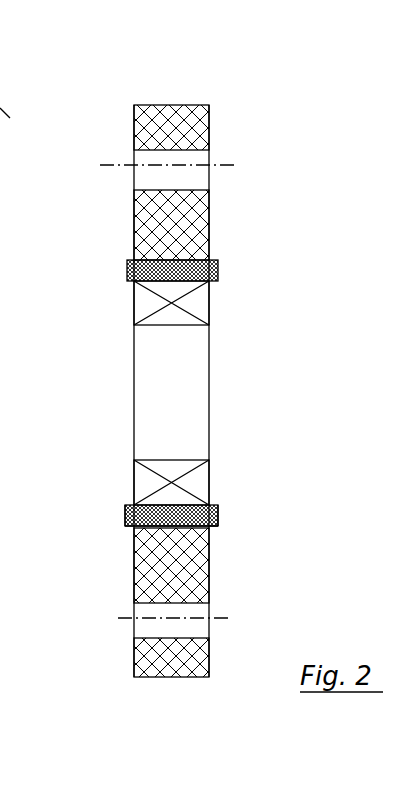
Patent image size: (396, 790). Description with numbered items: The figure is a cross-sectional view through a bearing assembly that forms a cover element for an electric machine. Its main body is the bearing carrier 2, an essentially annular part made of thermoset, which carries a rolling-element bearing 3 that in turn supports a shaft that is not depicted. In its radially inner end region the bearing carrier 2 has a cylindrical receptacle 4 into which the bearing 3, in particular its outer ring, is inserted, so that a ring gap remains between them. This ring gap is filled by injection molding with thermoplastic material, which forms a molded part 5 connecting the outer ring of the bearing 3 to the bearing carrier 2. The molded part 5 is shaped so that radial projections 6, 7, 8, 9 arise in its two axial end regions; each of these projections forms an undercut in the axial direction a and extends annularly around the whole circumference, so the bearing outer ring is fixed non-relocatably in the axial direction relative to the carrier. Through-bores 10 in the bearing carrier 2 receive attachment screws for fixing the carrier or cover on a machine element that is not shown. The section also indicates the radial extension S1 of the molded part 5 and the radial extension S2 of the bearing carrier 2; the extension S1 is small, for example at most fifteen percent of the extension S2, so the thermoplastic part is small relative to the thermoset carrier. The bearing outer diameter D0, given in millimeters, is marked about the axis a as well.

The bearing carrier 2 is at (198, 130).
The rolling-element bearing 3 is at (193, 303).
The cylindrical receptacle 4 is at (163, 262).
The molded part 5 is at (165, 515).
The radial projection 6 is at (214, 506).
The radial projection 7 is at (218, 528).
The radial projection 8 is at (125, 501).
The radial projection 9 is at (128, 528).
The through-bore 10 is at (190, 180).
The axial direction a is at (73, 391).
The radial extension of the molded part S1 is at (127, 278).
The radial extension of the bearing carrier S2 is at (83, 106).
The bearing outer diameter D0 is at (83, 300).